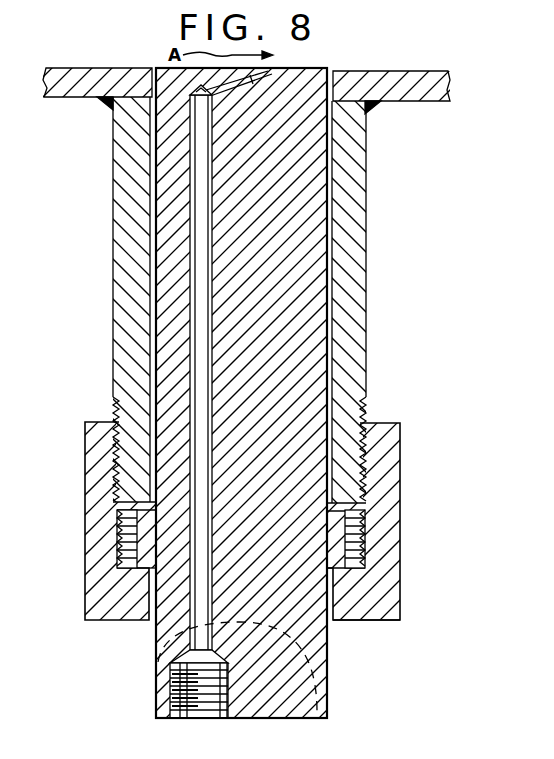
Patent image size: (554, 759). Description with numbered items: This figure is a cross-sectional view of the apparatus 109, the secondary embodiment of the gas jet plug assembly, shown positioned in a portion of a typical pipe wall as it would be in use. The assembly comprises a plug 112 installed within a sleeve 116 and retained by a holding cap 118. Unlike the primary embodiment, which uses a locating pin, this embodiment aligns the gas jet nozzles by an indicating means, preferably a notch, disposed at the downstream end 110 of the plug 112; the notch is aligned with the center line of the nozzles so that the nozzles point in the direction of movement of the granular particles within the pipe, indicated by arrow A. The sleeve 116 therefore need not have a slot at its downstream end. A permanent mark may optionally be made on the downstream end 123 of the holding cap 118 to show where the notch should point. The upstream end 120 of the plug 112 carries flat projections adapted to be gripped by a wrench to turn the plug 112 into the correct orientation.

The apparatus 109 is at (436, 711).
The downstream end 110 is at (325, 68).
The plug 112 is at (310, 224).
The sleeve 116 is at (366, 153).
The holding cap 118 is at (390, 480).
The upstream end 120 is at (290, 718).
The downstream end 123 is at (373, 623).